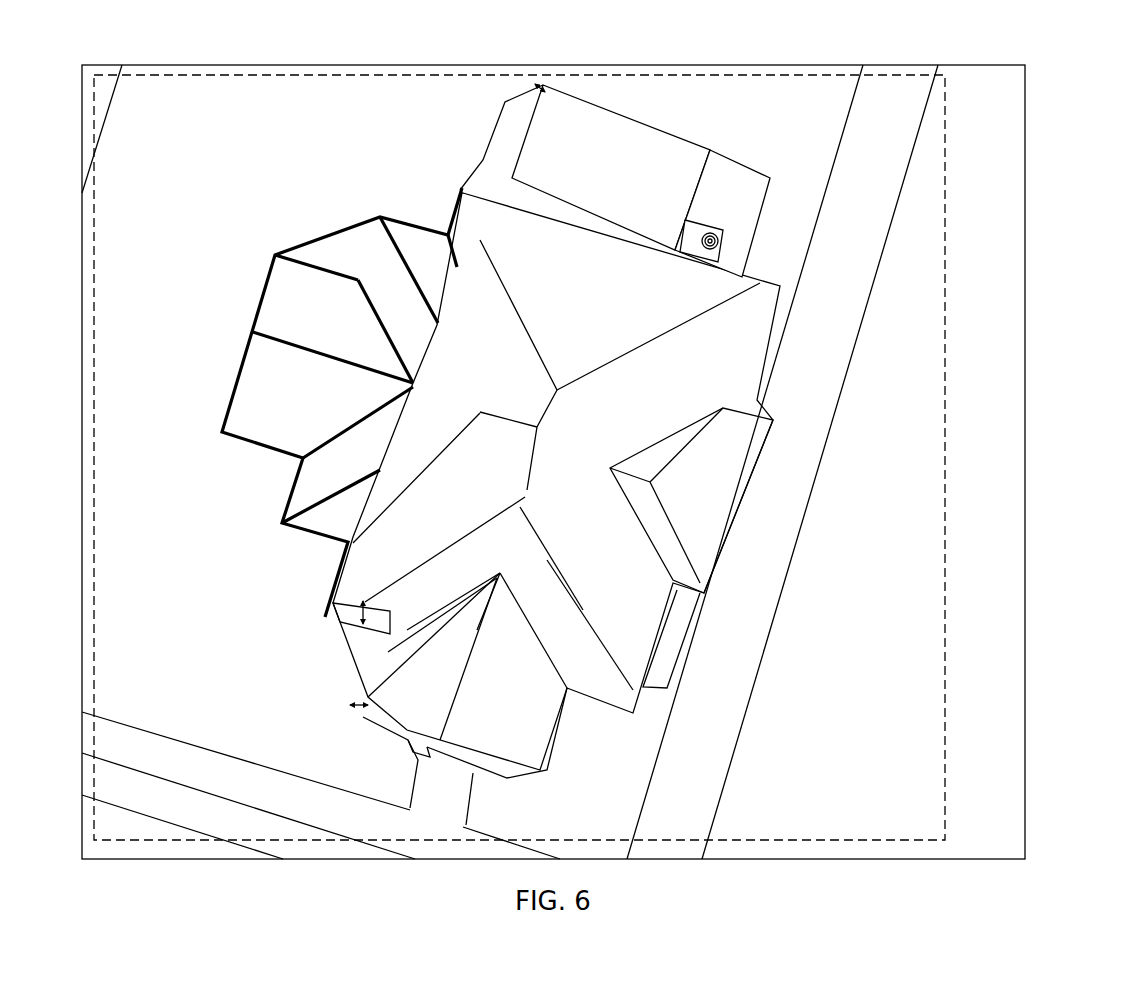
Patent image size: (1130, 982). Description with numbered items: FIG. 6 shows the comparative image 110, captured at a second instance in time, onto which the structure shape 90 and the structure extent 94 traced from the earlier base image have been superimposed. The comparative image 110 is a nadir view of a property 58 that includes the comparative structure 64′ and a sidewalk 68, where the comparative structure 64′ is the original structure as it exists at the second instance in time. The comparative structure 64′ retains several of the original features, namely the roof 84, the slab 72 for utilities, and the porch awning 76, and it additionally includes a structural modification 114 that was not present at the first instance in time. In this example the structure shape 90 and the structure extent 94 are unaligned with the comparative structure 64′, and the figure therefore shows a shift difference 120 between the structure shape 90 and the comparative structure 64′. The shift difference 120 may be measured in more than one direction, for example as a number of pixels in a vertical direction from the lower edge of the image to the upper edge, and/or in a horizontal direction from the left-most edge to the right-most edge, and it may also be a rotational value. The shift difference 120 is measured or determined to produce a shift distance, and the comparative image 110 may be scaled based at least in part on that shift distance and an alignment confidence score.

The comparative image 110 is at (1042, 124).
The property 58 is at (945, 430).
The sidewalk 68 is at (797, 542).
The porch awning 76 is at (487, 160).
The structure extent 94 is at (567, 102).
The slab for utilities 72 is at (767, 180).
The structure shape 90 is at (703, 138).
The roof 84 is at (452, 210).
The structural modification 114 is at (295, 487).
The comparative structure 64′ is at (362, 247).
The shift difference 120 is at (535, 88).